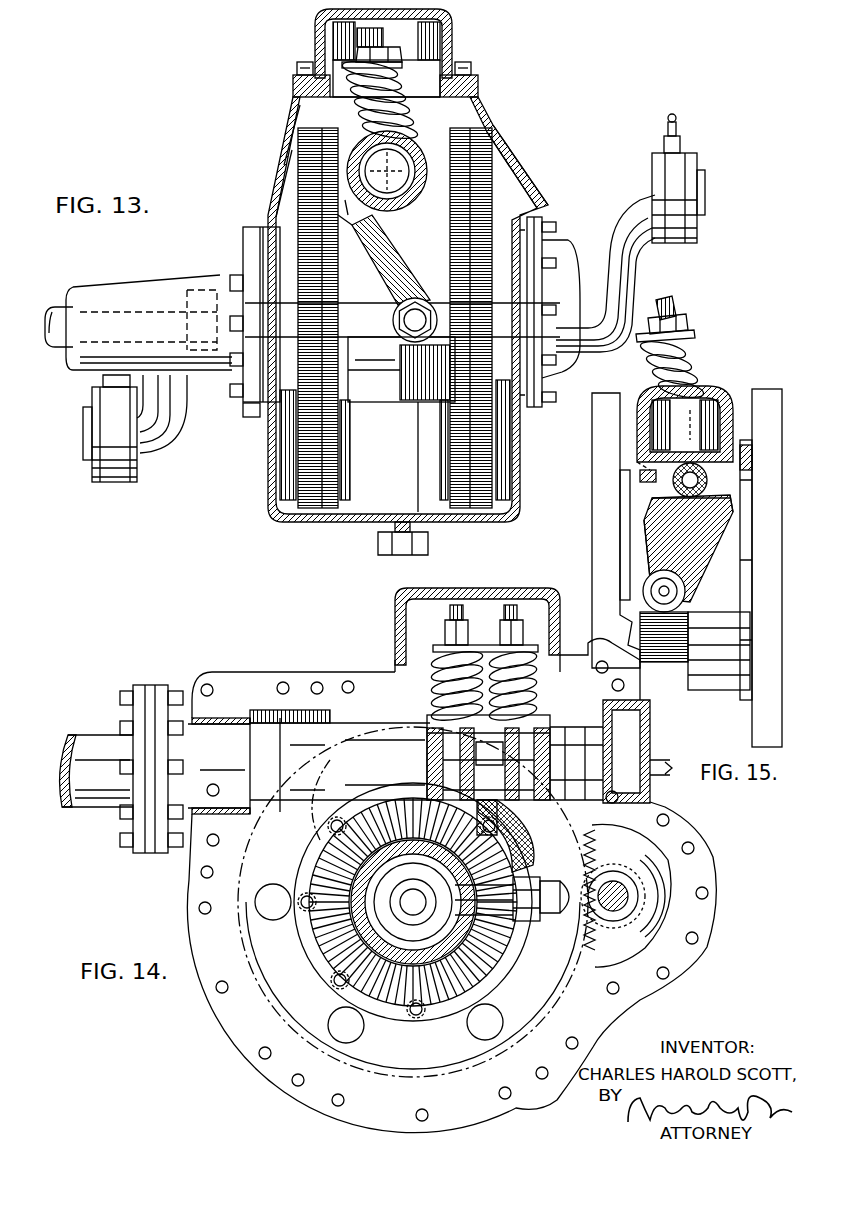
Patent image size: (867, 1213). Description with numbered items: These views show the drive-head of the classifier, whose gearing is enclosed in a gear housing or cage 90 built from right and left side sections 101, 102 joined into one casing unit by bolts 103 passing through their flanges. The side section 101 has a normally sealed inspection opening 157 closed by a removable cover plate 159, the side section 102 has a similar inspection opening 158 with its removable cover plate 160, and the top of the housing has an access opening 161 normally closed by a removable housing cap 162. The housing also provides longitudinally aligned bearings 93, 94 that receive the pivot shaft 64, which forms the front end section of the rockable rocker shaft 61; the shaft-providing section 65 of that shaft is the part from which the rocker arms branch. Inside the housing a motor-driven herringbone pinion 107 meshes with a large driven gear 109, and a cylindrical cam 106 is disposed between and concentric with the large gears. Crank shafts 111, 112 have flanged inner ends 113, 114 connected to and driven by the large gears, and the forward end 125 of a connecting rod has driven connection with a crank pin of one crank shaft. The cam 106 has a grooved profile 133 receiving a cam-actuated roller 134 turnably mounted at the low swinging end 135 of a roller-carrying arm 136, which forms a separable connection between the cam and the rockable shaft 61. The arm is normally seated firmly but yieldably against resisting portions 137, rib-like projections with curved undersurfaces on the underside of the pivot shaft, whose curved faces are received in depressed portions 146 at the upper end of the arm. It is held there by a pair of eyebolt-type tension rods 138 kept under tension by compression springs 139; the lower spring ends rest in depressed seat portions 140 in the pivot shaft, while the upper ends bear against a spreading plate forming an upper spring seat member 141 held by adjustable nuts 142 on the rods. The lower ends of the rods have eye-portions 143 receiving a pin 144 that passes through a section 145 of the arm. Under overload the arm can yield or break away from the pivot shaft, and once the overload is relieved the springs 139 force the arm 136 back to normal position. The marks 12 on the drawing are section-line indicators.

In FIG. 13, the section line 12- 12 is at (45, 332).
In FIG. 14, the rockable shaft 61 is at (62, 775).
In FIG. 13, the pivot shaft 64 is at (348, 150).
In FIG. 15, the pivot shaft 64 is at (645, 405).
In FIG. 14, the pivot shaft 64 is at (309, 779).
In FIG. 14, the shaft-providing section 65 is at (95, 742).
In FIG. 13, the gear housing 90 is at (291, 72).
In FIG. 14, the bearing 93 is at (605, 724).
In FIG. 14, the bearing 94 is at (213, 723).
In FIG. 13, the right side section 101 is at (478, 85).
In FIG. 13, the left side section 102 is at (293, 88).
In FIG. 13, the bolts 103 is at (428, 545).
In FIG. 13, the cylindrical cam 106 is at (444, 449).
In FIG. 14, the pinion 107 is at (640, 905).
In FIG. 14, the large driven gear 109 is at (622, 848).
In FIG. 13, the crank shaft 111 is at (618, 194).
In FIG. 13, the crank shaft 112 is at (152, 455).
In FIG. 13, the flanged inner end 113 is at (492, 440).
In FIG. 13, the flanged inner end 114 is at (280, 446).
In FIG. 13, the forward end of connecting rod 125 is at (112, 483).
In FIG. 13, the grooved profile 133 is at (408, 412).
In FIG. 15, the grooved profile 133 is at (665, 642).
In FIG. 13, the cam-actuated roller 134 is at (405, 342).
In FIG. 15, the cam-actuated roller 134 is at (688, 605).
In FIG. 14, the cam-actuated roller 134 is at (510, 935).
In FIG. 15, the low swinging end 135 is at (641, 589).
In FIG. 14, the low swinging end 135 is at (528, 912).
In FIG. 13, the roller-carrying arm 136 is at (395, 272).
In FIG. 15, the roller-carrying arm 136 is at (690, 565).
In FIG. 14, the roller-carrying arm 136 is at (520, 830).
In FIG. 13, the resisting portions 137 is at (335, 205).
In FIG. 15, the resisting portions 137 is at (720, 410).
In FIG. 13, the tension rods 138 is at (357, 38).
In FIG. 15, the tension rods 138 is at (668, 304).
In FIG. 14, the tension rods 138 is at (480, 588).
In FIG. 13, the compression springs 139 is at (400, 100).
In FIG. 15, the compression springs 139 is at (690, 356).
In FIG. 14, the compression springs 139 is at (432, 664).
In FIG. 13, the depressed seat portions 140 is at (405, 134).
In FIG. 15, the depressed seat portions 140 is at (692, 385).
In FIG. 14, the depressed seat portions 140 is at (522, 715).
In FIG. 13, the upper spring seat member 141 is at (373, 67).
In FIG. 15, the upper spring seat member 141 is at (693, 333).
In FIG. 14, the upper spring seat member 141 is at (433, 648).
In FIG. 13, the nuts 142 is at (378, 54).
In FIG. 15, the nuts 142 is at (682, 322).
In FIG. 14, the nuts 142 is at (445, 628).
In FIG. 15, the eye-portions 143 is at (665, 496).
In FIG. 14, the eye-portions 143 is at (458, 765).
In FIG. 15, the pin 144 is at (700, 522).
In FIG. 14, the pin 144 is at (437, 780).
In FIG. 15, the section of upper end of arm 145 is at (665, 512).
In FIG. 14, the section of upper end of arm 145 is at (520, 800).
In FIG. 15, the depressed portions 146 is at (655, 483).
In FIG. 13, the inspection opening 157 is at (510, 172).
In FIG. 13, the inspection opening 158 is at (282, 147).
In FIG. 13, the removable cover plate 159 is at (516, 187).
In FIG. 13, the removable cover plate 160 is at (284, 157).
In FIG. 13, the access opening 161 is at (432, 76).
In FIG. 13, the housing cap 162 is at (452, 22).